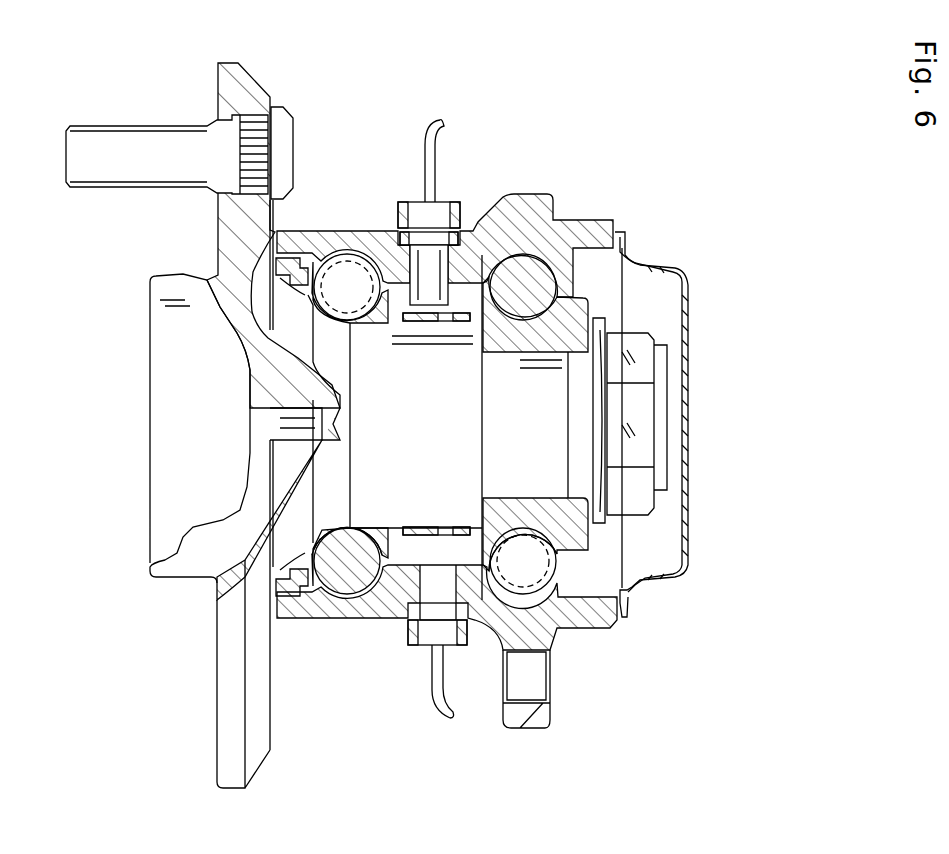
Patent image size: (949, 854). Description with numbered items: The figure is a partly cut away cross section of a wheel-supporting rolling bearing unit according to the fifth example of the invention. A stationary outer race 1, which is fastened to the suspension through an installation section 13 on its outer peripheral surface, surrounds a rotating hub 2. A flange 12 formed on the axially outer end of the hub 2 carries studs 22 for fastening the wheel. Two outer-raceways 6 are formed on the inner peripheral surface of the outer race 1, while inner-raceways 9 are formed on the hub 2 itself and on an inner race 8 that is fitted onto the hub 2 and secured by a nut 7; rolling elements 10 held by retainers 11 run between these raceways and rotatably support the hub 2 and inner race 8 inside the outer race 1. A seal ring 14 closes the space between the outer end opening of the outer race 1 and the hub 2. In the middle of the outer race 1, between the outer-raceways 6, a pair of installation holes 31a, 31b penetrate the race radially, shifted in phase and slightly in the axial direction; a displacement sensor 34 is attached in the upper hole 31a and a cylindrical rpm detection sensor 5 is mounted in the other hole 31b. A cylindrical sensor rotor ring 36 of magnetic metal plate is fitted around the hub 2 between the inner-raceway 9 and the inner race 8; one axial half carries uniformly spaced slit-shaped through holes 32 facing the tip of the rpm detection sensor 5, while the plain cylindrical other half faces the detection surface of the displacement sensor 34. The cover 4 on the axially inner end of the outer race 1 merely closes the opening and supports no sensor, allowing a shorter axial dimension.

The outer race 1 is at (383, 610).
The hub 2 is at (173, 567).
The cover 4 is at (690, 380).
The rpm detection sensor 5 is at (448, 607).
The outer-raceways 6 is at (360, 253).
The nut 7 is at (637, 425).
The inner race 8 is at (572, 543).
The inner-raceways 9 is at (353, 527).
The rolling elements 10 is at (353, 323).
The retainers 11 is at (570, 282).
The flange 12 is at (250, 83).
The installation section 13 is at (527, 717).
The seal ring 14 is at (245, 653).
The studs 22 is at (145, 137).
The installation hole 31a is at (443, 253).
The installation hole 31b is at (422, 613).
The slit-shaped through holes 32 is at (448, 318).
The displacement sensor 34 is at (420, 263).
The sensor rotor ring 36 is at (420, 317).